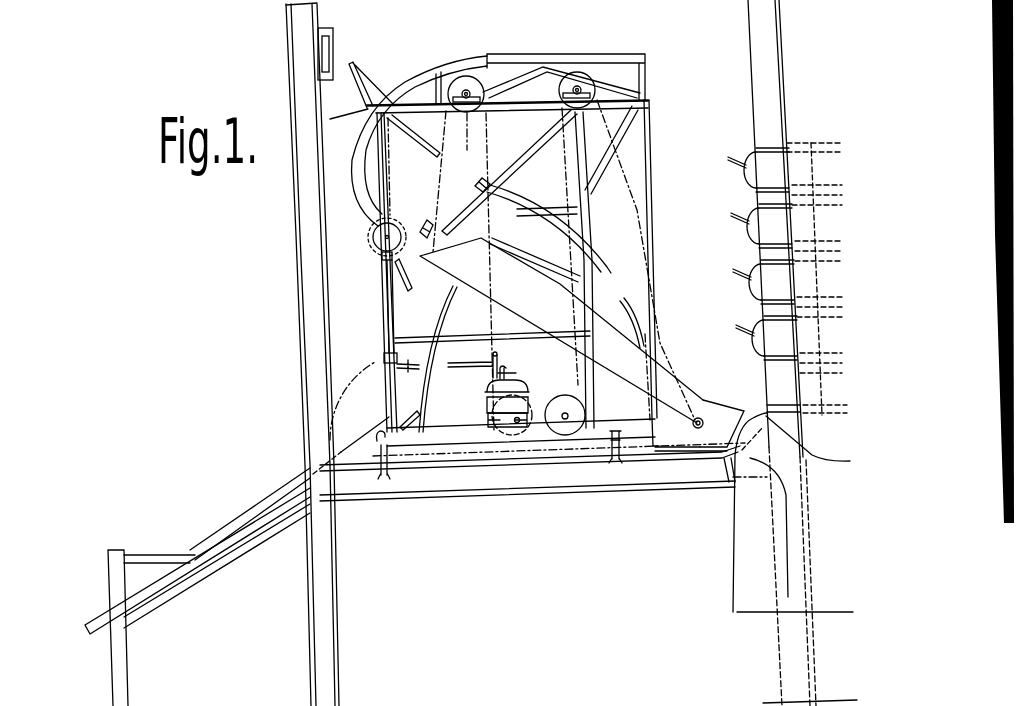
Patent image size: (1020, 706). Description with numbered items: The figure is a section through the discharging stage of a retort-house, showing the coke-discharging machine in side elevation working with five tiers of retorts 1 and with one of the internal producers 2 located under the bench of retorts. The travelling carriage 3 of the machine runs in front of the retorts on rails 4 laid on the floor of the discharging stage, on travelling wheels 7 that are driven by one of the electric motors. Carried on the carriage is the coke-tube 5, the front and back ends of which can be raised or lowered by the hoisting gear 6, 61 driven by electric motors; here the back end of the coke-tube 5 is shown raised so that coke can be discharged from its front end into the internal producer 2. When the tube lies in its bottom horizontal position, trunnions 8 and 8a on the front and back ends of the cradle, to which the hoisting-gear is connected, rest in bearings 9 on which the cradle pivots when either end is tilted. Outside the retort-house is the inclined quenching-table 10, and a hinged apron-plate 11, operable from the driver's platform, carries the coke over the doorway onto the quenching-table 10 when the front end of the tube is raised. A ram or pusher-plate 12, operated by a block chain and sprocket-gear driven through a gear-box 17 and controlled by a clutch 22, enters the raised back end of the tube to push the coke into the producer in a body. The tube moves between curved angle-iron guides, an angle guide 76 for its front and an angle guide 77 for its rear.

The retorts 1 is at (778, 224).
The internal producer 2 is at (842, 497).
The travelling carriage 3 is at (542, 430).
The rails 4 is at (615, 462).
The coke-tube 5 is at (595, 320).
The hoisting gear 6 is at (584, 88).
The hoisting gear 61 is at (535, 415).
The travelling wheels 7 is at (381, 478).
The trunnion 8 is at (701, 418).
The trunnion 8a is at (432, 255).
The bearings 9 is at (699, 428).
The inclined quenching-table 10 is at (240, 520).
The hinged apron-plate 11 is at (341, 450).
The ram or pusher-plate 12 is at (425, 222).
The gear-box 17 is at (493, 400).
The clutch 22 is at (334, 54).
The angle guide 76 is at (664, 250).
The angle guide 77 is at (450, 305).